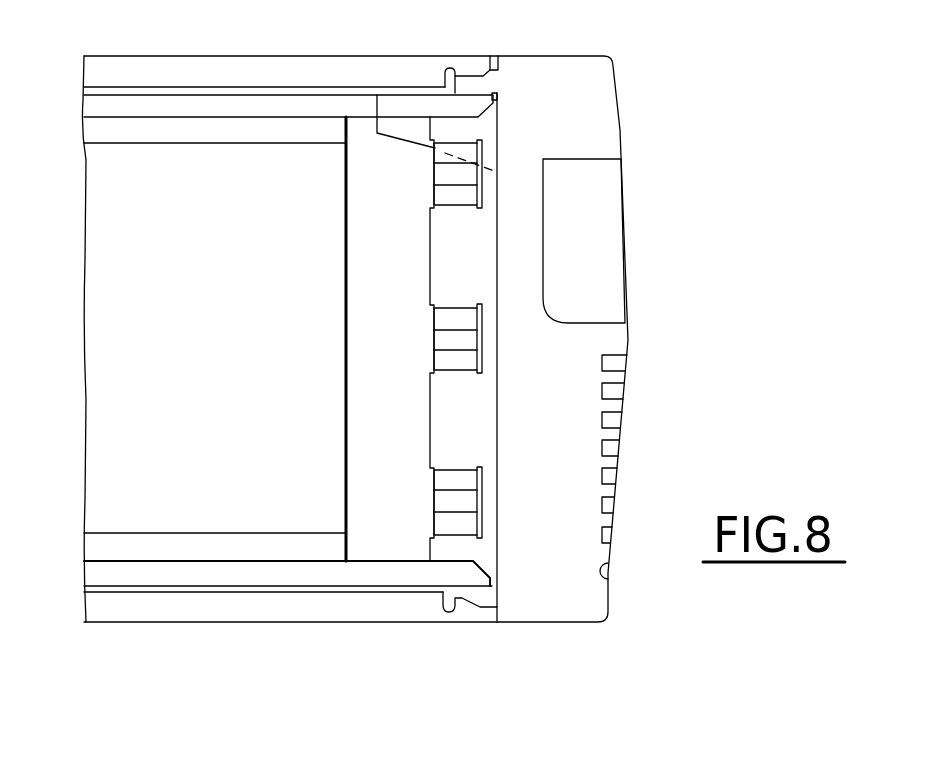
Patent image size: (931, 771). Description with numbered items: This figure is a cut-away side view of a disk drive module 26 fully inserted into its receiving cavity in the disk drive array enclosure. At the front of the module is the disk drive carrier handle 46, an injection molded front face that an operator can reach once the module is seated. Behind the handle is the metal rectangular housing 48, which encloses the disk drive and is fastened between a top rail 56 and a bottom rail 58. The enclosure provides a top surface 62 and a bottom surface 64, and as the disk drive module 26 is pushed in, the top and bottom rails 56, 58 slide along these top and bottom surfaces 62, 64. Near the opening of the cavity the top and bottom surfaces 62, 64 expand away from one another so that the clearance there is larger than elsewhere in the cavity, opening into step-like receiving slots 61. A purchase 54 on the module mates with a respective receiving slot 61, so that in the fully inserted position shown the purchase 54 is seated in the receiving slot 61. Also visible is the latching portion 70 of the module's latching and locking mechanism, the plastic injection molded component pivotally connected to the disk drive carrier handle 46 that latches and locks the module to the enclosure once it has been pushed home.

The disk drive module 26 is at (733, 100).
The disk drive carrier handle 46 is at (577, 56).
The housing 48 is at (241, 311).
The purchase 54 is at (491, 56).
The top rail 56 is at (240, 108).
The bottom rail 58 is at (202, 575).
The receiving slot 61 is at (450, 67).
The top surface 62 is at (335, 92).
The bottom surface 64 is at (277, 590).
The latching portion 70 is at (408, 135).